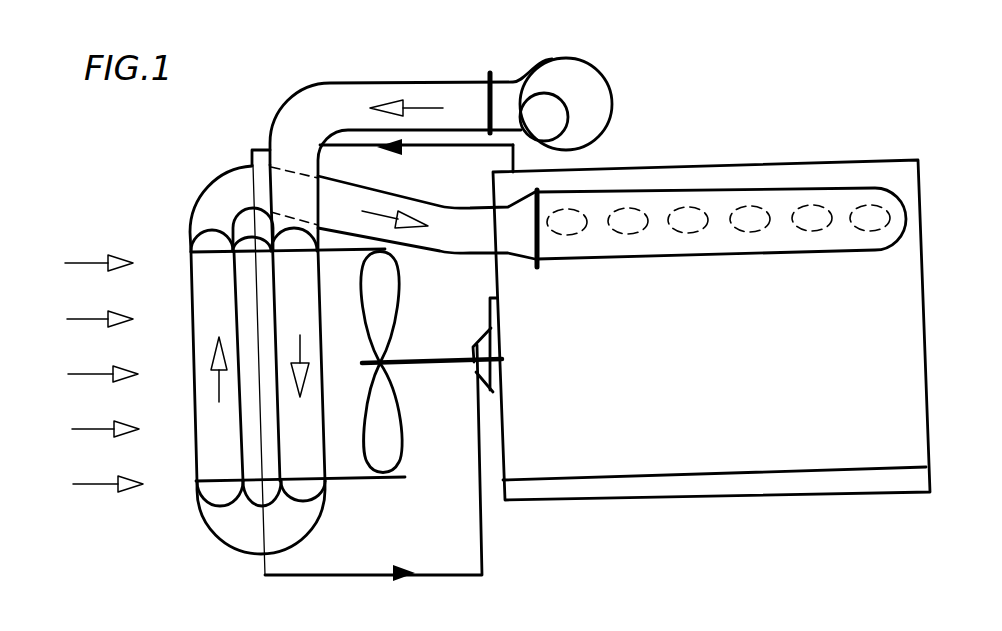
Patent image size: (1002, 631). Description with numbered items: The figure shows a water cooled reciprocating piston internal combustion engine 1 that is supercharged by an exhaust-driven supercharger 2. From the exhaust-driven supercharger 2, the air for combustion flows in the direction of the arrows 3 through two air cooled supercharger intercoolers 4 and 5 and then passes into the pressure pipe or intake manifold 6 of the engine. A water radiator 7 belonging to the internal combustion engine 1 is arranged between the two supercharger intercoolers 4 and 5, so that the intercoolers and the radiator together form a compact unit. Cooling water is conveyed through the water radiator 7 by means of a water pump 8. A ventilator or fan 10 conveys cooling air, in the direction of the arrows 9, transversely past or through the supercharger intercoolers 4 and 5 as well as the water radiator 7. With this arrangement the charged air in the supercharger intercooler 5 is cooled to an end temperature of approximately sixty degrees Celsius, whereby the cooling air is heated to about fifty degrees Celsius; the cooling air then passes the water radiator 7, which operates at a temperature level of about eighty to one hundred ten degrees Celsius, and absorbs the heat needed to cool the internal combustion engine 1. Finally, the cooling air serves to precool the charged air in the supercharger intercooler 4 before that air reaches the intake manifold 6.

The internal combustion engine 1 is at (902, 365).
The exhaust-driven supercharger 2 is at (597, 90).
The arrows 3 is at (393, 95).
The supercharger intercooler 4 is at (308, 320).
The supercharger intercooler 5 is at (202, 360).
The intake manifold 6 is at (697, 202).
The water radiator 7 is at (366, 373).
The water pump 8 is at (480, 367).
The arrows 9 is at (110, 255).
The fan 10 is at (383, 315).